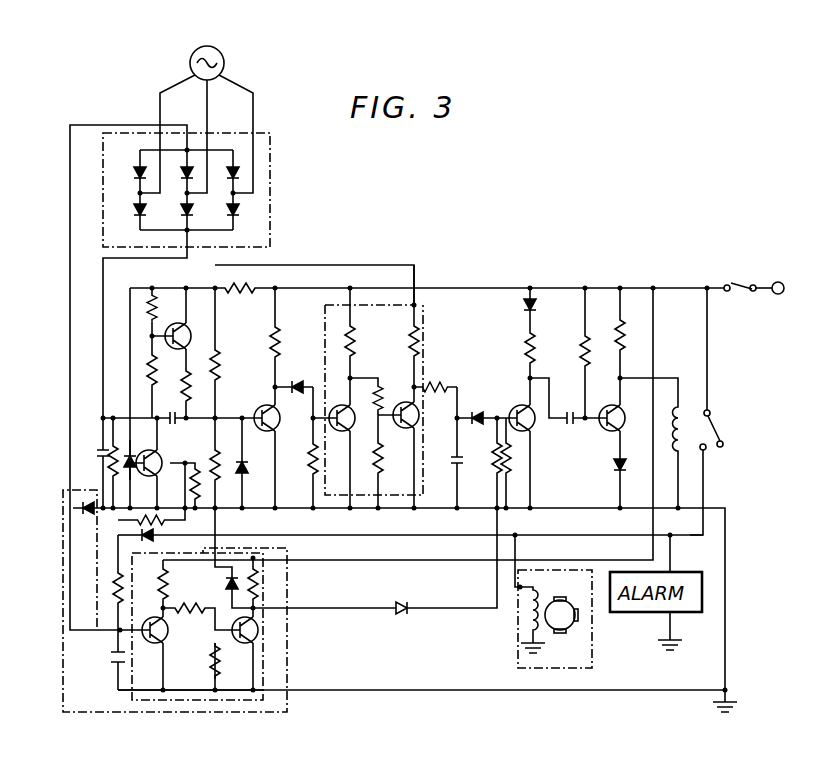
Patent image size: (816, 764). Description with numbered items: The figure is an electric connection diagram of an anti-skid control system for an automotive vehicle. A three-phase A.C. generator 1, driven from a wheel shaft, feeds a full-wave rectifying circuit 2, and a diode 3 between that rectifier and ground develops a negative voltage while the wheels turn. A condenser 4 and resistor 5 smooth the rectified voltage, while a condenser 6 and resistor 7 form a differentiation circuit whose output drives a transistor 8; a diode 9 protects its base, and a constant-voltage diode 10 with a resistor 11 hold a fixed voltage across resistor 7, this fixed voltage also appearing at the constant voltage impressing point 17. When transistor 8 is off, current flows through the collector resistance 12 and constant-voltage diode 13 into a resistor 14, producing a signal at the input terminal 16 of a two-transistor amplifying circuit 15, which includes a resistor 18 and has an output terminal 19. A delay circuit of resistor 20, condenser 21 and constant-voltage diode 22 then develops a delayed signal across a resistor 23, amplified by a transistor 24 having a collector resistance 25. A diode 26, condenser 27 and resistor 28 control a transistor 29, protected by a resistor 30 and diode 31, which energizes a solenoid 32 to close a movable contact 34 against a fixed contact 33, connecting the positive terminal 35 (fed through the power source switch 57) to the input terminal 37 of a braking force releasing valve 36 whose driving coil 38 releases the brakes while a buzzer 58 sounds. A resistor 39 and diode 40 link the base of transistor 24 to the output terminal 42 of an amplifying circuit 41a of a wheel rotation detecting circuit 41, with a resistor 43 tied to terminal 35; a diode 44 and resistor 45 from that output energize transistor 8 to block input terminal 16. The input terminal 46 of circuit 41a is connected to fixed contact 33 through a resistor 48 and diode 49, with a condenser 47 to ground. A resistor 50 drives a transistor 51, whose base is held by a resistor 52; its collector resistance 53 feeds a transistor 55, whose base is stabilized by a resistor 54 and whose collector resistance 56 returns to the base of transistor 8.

The three-phase A.C. generator 1 is at (220, 52).
The full-wave rectifying circuit 2 is at (272, 133).
The diode 3 is at (82, 505).
The condenser 4 is at (122, 462).
The resistor 5 is at (102, 450).
The condenser 6 is at (171, 412).
The resistor 7 is at (219, 366).
The transistor 8 is at (262, 408).
The diode 9 is at (246, 472).
The constant-voltage diode 10 is at (112, 465).
The resistor 11 is at (263, 284).
The collector resistance 12 is at (283, 334).
The constant-voltage diode 13 is at (298, 381).
The resistor 14 is at (308, 455).
The amplifying circuit 15 is at (383, 303).
The input terminal 16 is at (330, 404).
The constant voltage impressing point 17 is at (417, 300).
The resistor 18 is at (420, 334).
The output terminal 19 is at (418, 385).
The resistor 20 is at (448, 386).
The condenser 21 is at (453, 462).
The constant-voltage diode 22 is at (480, 411).
The resistor 23 is at (508, 455).
The transistor 24 is at (530, 428).
The collector resistance 25 is at (535, 355).
The diode 26 is at (527, 298).
The condenser 27 is at (568, 410).
The resistor 28 is at (590, 345).
The transistor 29 is at (605, 430).
The resistor 30 is at (627, 347).
The diode 31 is at (612, 466).
The solenoid 32 is at (683, 412).
The fixed contact 33 is at (707, 455).
The movable contact 34 is at (713, 437).
The positive terminal 35 is at (776, 281).
The braking force releasing valve 36 is at (595, 650).
The input terminal 37 is at (515, 592).
The driving coil 38 is at (545, 622).
The resistor 39 is at (494, 462).
The diode 40 is at (402, 615).
The wheel rotation detecting circuit 41 is at (185, 713).
The amplifying circuit 41a is at (242, 700).
The output terminal 42 is at (258, 612).
The resistor 43 is at (258, 580).
The diode 44 is at (225, 584).
The resistor 45 is at (221, 457).
The input terminal 46 is at (140, 630).
The condenser 47 is at (110, 662).
The resistor 48 is at (110, 590).
The diode 49 is at (140, 540).
The resistor 50 is at (135, 523).
The transistor 51 is at (138, 458).
The resistor 52 is at (197, 462).
The resistor 53 is at (148, 392).
The resistor 54 is at (148, 305).
The transistor 55 is at (165, 333).
The resistor 56 is at (175, 391).
The power source switch 57 is at (735, 297).
The buzzer 58 is at (683, 620).